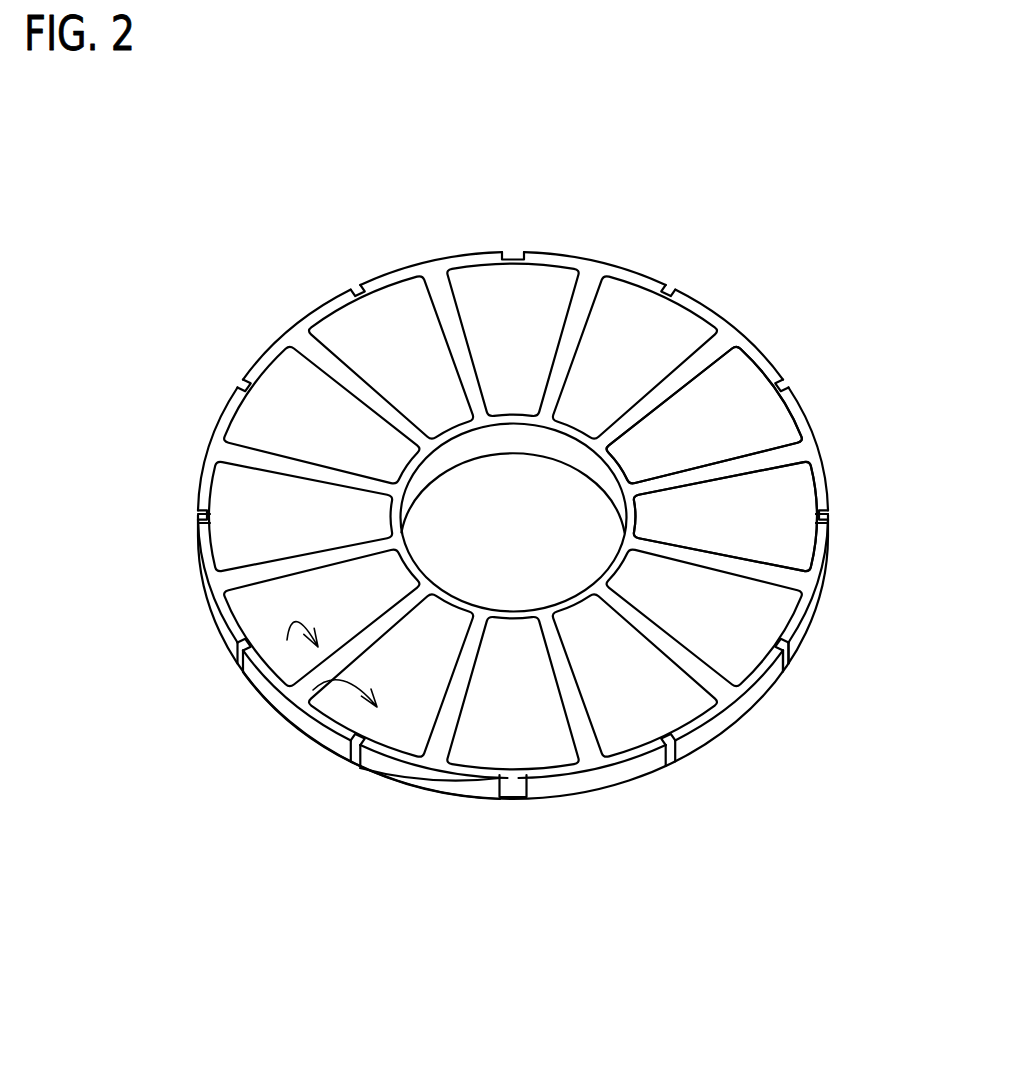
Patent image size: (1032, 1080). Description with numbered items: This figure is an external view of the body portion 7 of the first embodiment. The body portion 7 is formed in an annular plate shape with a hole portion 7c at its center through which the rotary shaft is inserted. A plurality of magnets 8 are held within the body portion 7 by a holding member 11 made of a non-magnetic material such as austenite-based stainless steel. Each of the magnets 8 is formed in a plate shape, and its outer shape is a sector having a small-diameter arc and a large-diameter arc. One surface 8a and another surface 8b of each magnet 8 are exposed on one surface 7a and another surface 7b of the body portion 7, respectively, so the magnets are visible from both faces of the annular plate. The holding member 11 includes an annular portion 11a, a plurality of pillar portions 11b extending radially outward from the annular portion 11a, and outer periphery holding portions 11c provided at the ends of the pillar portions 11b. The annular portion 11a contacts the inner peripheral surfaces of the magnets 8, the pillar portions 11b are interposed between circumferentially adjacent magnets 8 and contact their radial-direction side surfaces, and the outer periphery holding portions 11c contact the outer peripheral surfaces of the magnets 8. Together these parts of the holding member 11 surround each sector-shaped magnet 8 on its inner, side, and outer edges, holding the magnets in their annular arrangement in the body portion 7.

The body portion 7 is at (734, 259).
The one surface of the body portion 7a is at (629, 799).
The another surface of the body portion 7b is at (614, 296).
The hole portion 7c is at (456, 458).
The magnets 8 is at (313, 690).
The one surface of the magnet 8a is at (510, 798).
The another surface of the magnet 8b is at (275, 618).
The holding member 11 is at (431, 812).
The annular portion 11a is at (568, 456).
The pillar portions 11b is at (767, 460).
The outer periphery holding portions 11c is at (823, 487).